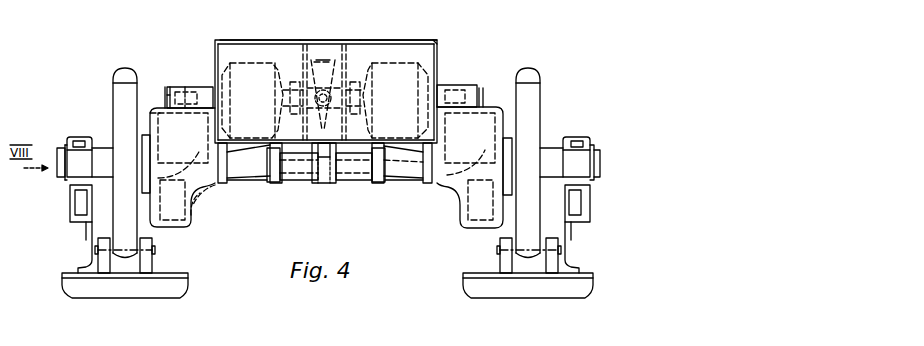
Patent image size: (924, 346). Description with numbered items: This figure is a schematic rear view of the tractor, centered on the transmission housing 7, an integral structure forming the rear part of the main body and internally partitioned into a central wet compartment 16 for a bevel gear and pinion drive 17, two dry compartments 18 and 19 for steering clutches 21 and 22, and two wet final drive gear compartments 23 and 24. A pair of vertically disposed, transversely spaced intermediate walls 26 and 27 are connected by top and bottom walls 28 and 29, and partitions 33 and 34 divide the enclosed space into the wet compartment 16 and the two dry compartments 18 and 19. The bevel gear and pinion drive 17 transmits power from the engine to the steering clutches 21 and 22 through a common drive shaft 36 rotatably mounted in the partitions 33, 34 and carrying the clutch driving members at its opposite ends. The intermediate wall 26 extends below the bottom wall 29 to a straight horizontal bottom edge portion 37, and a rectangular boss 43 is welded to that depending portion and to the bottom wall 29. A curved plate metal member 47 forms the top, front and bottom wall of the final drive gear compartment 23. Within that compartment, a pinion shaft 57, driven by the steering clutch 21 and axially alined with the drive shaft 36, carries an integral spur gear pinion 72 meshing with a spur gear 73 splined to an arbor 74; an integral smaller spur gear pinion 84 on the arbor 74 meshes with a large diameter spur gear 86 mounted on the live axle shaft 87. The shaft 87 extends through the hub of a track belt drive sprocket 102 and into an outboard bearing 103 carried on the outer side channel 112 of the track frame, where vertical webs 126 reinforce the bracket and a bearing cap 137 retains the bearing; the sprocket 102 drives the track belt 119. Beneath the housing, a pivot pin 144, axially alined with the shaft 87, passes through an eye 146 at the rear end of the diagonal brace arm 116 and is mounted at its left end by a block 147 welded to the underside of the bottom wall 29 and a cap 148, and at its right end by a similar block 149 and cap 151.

The transmission housing 7 is at (437, 40).
The central wet compartment 16 is at (320, 45).
The bevel gear and pinion drive 17 is at (321, 72).
The dry compartment 18 is at (236, 45).
The dry compartment 19 is at (417, 48).
The steering clutch 21 is at (258, 66).
The steering clutch 22 is at (395, 66).
The wet final drive gear compartment 23 is at (176, 82).
The wet final drive gear compartment 24 is at (486, 79).
The intermediate wall 26 is at (215, 48).
The intermediate wall 27 is at (437, 60).
The top wall 28 is at (372, 40).
The bottom wall 29 is at (405, 148).
The partition 33 is at (303, 55).
The partition 34 is at (346, 58).
The common drive shaft 36 is at (326, 106).
The bottom edge portion 37 is at (205, 188).
The rectangular boss 43 is at (226, 180).
The curved plate metal member 47 is at (186, 86).
The pinion shaft 57 is at (165, 90).
The spur gear pinion 72 is at (195, 90).
The spur gear 73 is at (196, 145).
The arbor 74 is at (152, 120).
The spur gear pinion 84 is at (158, 110).
The large diameter spur gear 86 is at (168, 226).
The shaft 87 is at (200, 197).
The track belt drive sprocket 102 is at (115, 75).
The outboard bearing 103 is at (94, 129).
The outer side channel 112 is at (70, 196).
The diagonal brace arm 116 is at (258, 184).
The track belt 119 is at (124, 290).
The vertical webs 126 is at (76, 208).
The bearing cap 137 is at (58, 150).
The pivot pin 144 is at (263, 162).
The eye 146 is at (296, 181).
The block 147 is at (274, 143).
The cap 148 is at (270, 182).
The block 149 is at (324, 125).
The cap 151 is at (322, 183).